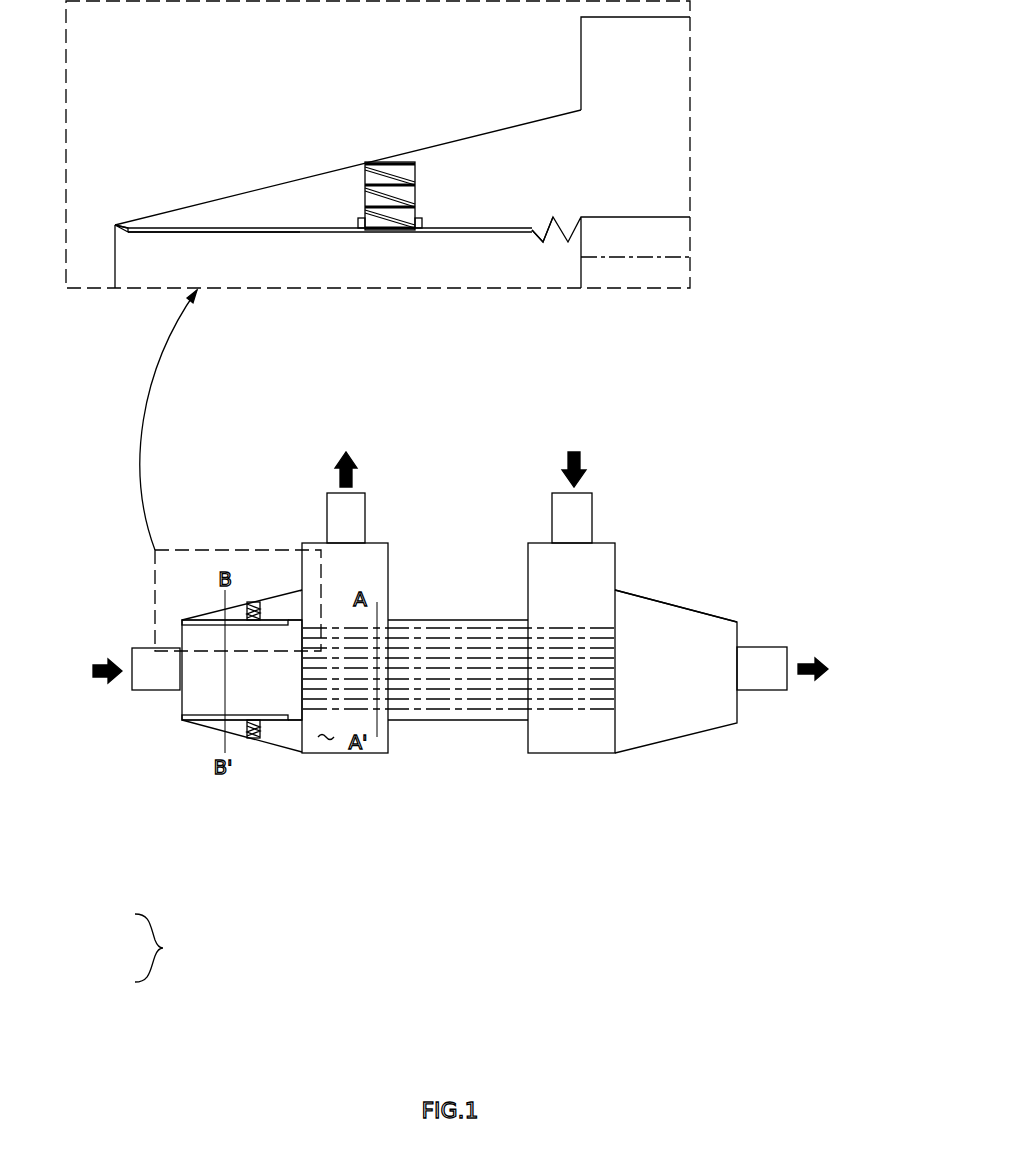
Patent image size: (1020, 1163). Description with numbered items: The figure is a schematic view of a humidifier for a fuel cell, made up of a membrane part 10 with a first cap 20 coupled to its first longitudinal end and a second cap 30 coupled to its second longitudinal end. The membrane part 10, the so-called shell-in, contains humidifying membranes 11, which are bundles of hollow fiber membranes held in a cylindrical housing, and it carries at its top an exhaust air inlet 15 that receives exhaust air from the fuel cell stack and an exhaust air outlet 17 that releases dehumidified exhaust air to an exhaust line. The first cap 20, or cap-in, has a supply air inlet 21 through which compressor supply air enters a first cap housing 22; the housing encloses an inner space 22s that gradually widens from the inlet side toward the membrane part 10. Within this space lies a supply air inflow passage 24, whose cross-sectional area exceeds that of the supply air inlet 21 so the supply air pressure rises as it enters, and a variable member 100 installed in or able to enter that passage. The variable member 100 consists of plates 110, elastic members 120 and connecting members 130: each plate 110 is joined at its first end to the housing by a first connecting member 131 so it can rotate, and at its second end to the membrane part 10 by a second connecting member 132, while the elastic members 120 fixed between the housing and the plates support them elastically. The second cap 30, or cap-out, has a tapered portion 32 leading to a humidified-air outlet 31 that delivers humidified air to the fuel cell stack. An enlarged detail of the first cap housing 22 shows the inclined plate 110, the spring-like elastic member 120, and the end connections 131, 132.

The membrane part 10 is at (657, 215).
The humidifying membranes 11 is at (418, 712).
The exhaust air inlet 15 is at (583, 513).
The exhaust air outlet 17 is at (355, 513).
The first cap 20 is at (213, 790).
The supply air inlet 21 is at (143, 657).
The first cap housing 22 is at (315, 173).
The inner space 22s is at (503, 197).
The supply air inflow passage 24 is at (277, 262).
The second cap 30 is at (680, 762).
The humidified-air outlet 31 is at (762, 653).
The tapered portion 32 is at (688, 607).
The variable member 100 is at (169, 948).
The plates 110 is at (228, 223).
The elastic members 120 is at (388, 163).
The connecting members 130 is at (297, 617).
The first connecting member 131 is at (120, 222).
The second connecting member 132 is at (555, 213).